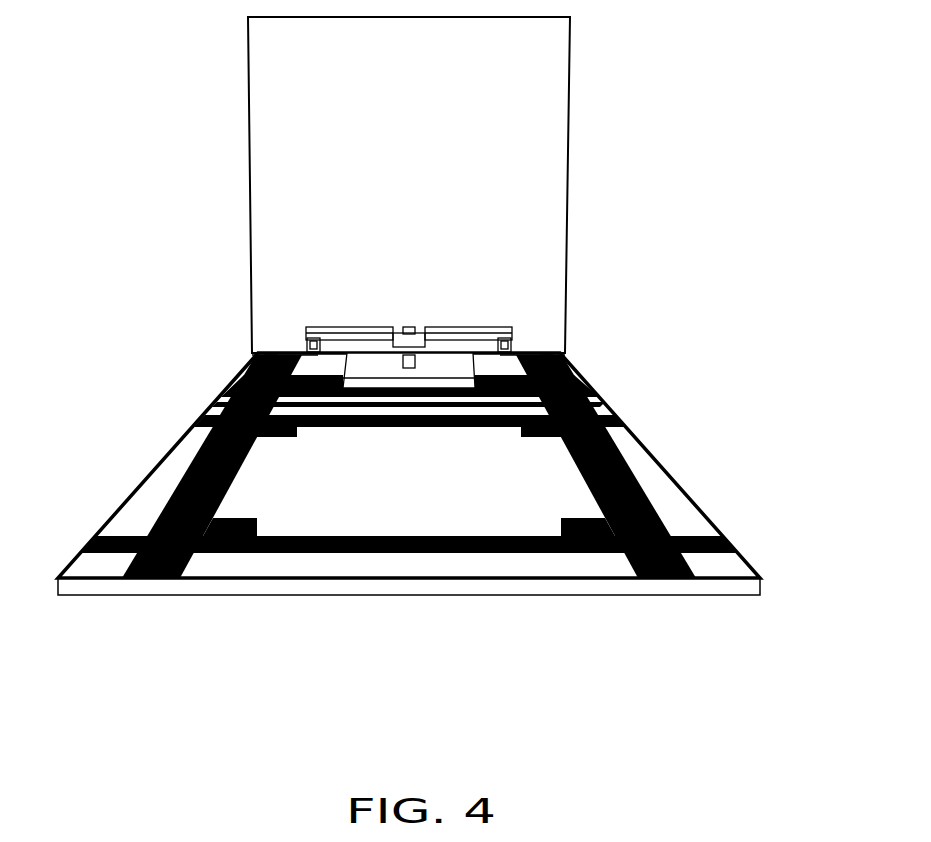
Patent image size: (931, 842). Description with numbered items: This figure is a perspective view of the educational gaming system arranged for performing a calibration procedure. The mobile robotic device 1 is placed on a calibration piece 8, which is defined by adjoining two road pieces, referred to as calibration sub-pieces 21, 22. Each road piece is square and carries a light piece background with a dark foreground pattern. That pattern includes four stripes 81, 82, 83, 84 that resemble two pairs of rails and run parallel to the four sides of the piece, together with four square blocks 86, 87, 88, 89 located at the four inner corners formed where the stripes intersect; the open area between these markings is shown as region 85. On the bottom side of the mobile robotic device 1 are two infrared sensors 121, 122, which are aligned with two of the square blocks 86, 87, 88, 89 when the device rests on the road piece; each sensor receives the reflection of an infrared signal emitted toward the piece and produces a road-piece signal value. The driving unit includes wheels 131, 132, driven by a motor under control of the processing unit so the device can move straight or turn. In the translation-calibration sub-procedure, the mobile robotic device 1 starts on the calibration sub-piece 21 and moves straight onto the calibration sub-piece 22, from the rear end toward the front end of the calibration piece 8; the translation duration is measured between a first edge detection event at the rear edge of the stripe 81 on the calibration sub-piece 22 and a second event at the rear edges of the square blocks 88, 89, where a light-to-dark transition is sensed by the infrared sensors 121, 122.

The mobile robotic device 1 is at (602, 140).
The calibration piece 8 is at (442, 511).
The calibration sub-piece 21 is at (588, 375).
The calibration sub-piece 22 is at (692, 493).
The stripe 81 is at (407, 428).
The stripe 82 is at (468, 553).
The stripe 83 is at (622, 463).
The stripe 84 is at (197, 463).
The central region 85 is at (375, 513).
The square block 86 is at (533, 437).
The square block 87 is at (285, 437).
The square block 88 is at (572, 517).
The square block 89 is at (248, 517).
The infrared sensor 121 is at (500, 338).
The infrared sensor 122 is at (308, 338).
The wheel 131 is at (553, 363).
The wheel 132 is at (265, 363).